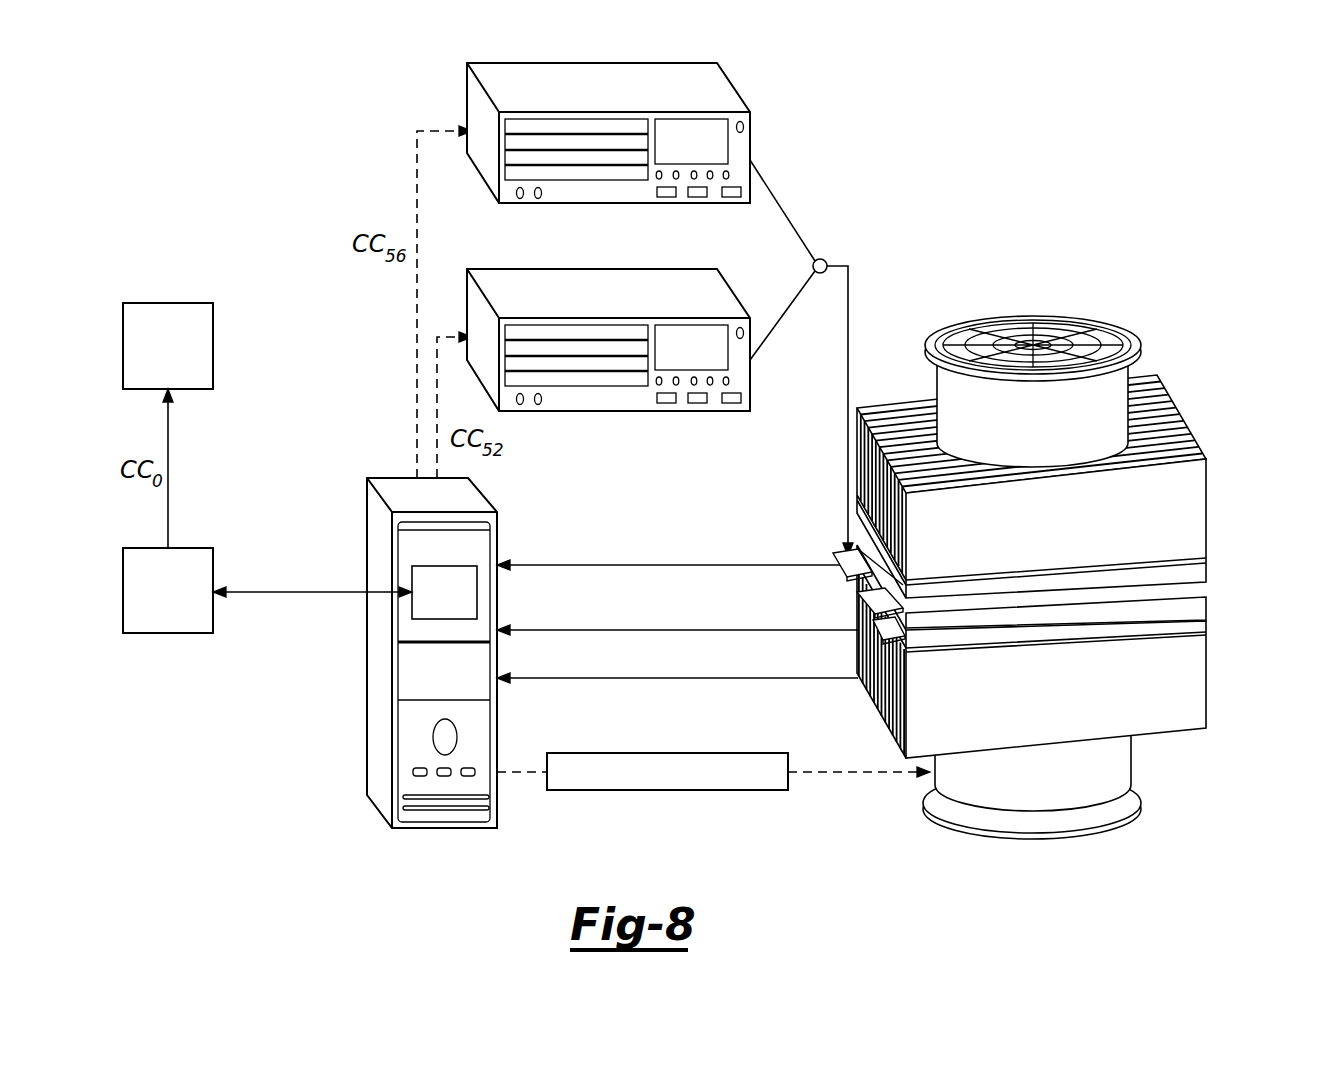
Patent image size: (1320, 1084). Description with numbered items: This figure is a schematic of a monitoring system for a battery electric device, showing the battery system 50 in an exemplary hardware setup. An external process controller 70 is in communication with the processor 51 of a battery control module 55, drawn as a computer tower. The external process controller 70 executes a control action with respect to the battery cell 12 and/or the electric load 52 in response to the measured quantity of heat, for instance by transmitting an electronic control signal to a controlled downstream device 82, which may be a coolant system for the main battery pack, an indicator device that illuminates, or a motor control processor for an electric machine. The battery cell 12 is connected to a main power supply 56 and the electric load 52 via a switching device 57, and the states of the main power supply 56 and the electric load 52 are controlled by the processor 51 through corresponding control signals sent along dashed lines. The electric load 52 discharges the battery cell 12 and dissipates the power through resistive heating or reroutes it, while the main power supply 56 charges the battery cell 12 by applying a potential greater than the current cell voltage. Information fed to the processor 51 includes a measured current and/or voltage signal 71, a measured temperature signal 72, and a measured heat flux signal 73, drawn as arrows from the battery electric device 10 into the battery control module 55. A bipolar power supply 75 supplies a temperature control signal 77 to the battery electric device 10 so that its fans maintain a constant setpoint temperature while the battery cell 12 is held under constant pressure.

The battery electric device 10 is at (1061, 564).
The battery cell 12 is at (1140, 598).
The battery system 50 is at (1210, 78).
The processor 51 is at (434, 609).
The electric load 52 is at (627, 411).
The battery control module 55 is at (478, 653).
The main power supply 56 is at (750, 88).
The switching device 57 is at (840, 238).
The external process controller 70 is at (157, 608).
The measured current and/or voltage signal 71 is at (683, 565).
The measured temperature signal 72 is at (683, 630).
The measured heat flux signal 73 is at (712, 678).
The bipolar power supply 75 is at (667, 753).
The temperature control signal 77 is at (855, 772).
The controlled downstream device 82 is at (157, 363).